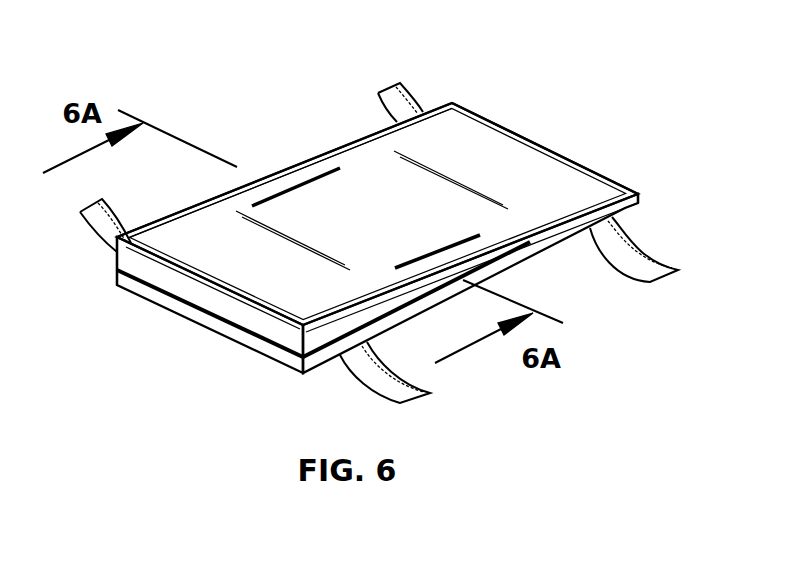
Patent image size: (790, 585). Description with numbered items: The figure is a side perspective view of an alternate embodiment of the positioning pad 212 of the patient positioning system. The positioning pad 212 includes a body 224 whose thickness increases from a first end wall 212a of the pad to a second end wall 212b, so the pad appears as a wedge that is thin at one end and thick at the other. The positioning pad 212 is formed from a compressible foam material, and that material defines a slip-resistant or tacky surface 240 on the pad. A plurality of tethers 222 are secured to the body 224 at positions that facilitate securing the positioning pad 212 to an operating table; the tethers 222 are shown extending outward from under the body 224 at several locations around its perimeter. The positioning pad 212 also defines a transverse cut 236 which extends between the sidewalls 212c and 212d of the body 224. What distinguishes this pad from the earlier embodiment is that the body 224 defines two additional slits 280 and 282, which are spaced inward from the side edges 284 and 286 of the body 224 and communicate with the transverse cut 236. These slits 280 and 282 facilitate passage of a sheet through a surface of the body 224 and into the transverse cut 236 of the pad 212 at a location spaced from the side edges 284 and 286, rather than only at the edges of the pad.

The positioning pad 212 is at (357, 133).
The first end wall 212a is at (577, 163).
The second end wall 212b is at (188, 316).
The sidewall 212c is at (548, 248).
The sidewall 212d is at (258, 183).
The tethers 222 is at (400, 82).
The body 224 is at (497, 132).
The transverse cut 236 is at (272, 346).
The slip-resistant or tacky surface 240 is at (436, 143).
The slit 280 is at (432, 262).
The slit 282 is at (297, 186).
The side edge 284 is at (377, 297).
The side edge 286 is at (247, 183).